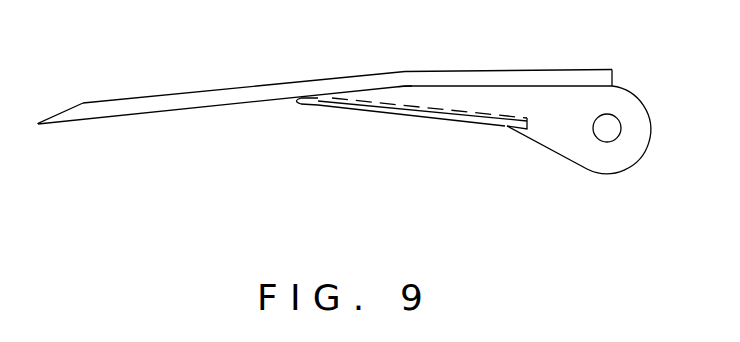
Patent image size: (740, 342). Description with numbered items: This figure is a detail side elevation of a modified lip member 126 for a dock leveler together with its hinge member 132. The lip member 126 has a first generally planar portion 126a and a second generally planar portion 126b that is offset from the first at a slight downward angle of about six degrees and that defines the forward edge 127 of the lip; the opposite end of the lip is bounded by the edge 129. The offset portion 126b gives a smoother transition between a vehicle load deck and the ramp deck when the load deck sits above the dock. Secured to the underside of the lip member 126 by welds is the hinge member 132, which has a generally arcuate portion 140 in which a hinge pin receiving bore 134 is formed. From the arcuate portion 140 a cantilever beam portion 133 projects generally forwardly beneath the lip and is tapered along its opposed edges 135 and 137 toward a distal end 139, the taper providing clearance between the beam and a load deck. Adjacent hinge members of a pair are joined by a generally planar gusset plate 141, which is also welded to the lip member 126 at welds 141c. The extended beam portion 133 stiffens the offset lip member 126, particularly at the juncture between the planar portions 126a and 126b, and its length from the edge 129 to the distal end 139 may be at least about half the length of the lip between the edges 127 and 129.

The lip member 126 is at (353, 93).
The first generally planar portion 126a is at (463, 68).
The second generally planar portion 126b is at (183, 94).
The forward edge 127 is at (38, 124).
The edge of the lip member 129 is at (613, 78).
The hinge member 132 is at (562, 156).
The cantilever beam portion 133 is at (352, 147).
The hinge pin receiving bore 134 is at (612, 134).
The tapered edge 135 is at (391, 112).
The tapered edge 137 is at (404, 86).
The distal end 139 is at (310, 104).
The arcuate portion 140 is at (652, 148).
The gusset plate 141 is at (485, 126).
The weld 141c is at (294, 101).